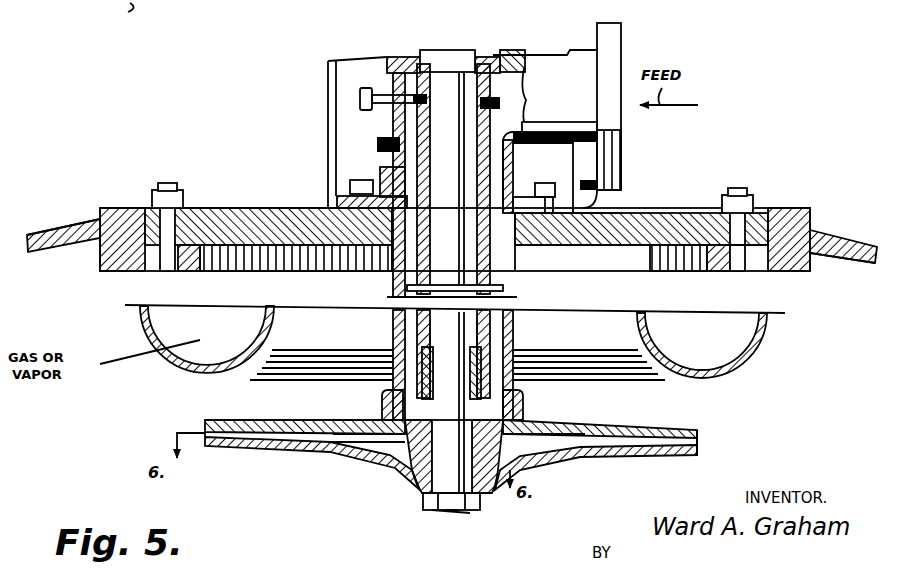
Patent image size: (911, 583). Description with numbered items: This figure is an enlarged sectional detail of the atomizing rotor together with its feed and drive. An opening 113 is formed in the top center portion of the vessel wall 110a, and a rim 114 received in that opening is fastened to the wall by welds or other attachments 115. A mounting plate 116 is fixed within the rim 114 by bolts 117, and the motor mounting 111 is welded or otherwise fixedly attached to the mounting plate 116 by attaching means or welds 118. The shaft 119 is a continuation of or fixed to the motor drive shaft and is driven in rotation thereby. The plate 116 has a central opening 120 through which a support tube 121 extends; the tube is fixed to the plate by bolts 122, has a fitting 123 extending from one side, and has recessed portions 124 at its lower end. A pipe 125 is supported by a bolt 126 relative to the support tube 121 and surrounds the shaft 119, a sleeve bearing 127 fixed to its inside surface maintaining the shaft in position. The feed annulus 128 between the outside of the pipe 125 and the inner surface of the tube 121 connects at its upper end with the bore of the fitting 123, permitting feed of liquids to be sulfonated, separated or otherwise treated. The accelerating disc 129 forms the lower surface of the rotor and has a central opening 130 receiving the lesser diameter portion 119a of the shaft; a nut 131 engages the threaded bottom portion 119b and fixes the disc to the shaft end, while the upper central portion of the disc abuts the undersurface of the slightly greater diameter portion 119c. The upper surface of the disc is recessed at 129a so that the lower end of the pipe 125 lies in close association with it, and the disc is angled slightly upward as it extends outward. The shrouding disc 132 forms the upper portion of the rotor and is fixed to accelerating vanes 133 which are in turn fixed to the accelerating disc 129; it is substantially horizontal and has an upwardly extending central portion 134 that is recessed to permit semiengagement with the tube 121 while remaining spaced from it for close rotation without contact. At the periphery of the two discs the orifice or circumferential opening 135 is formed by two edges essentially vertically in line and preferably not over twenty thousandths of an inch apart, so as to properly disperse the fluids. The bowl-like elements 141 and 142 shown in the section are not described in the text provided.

The vessel wall 110a is at (55, 232).
The motor mounting 111 is at (330, 80).
The opening 113 is at (98, 218).
The rim 114 is at (790, 213).
The welds or other attachments 115 is at (812, 226).
The mounting plate 116 is at (678, 212).
The bolts 117 is at (740, 195).
The attaching means or welds 118 is at (598, 204).
The shaft 119 is at (448, 70).
The lesser diameter portion of shaft 119a is at (440, 512).
The threaded bottom portion of shaft 119b is at (450, 512).
The slightly greater diameter portion of shaft 119c is at (425, 356).
The opening 120 is at (484, 258).
The support tube 121 is at (514, 348).
The bolts 122 is at (647, 258).
The fitting 123 is at (583, 68).
The recessed portions 124 is at (524, 405).
The pipe 125 is at (492, 127).
The bolt 126 is at (370, 88).
The sleeve bearing 127 is at (514, 364).
The feed annulus 128 is at (520, 316).
The accelerating disc 129 is at (596, 460).
The recess 129a is at (398, 472).
The opening 130 is at (415, 492).
The nut 131 is at (480, 512).
The shrouding disc 132 is at (622, 430).
The accelerating vanes 133 is at (330, 455).
The upwardly extending central portion 134 is at (382, 404).
The orifice or circumferential opening 135 is at (700, 440).
The bowl 141 is at (146, 334).
The bowl wall 142 is at (192, 372).